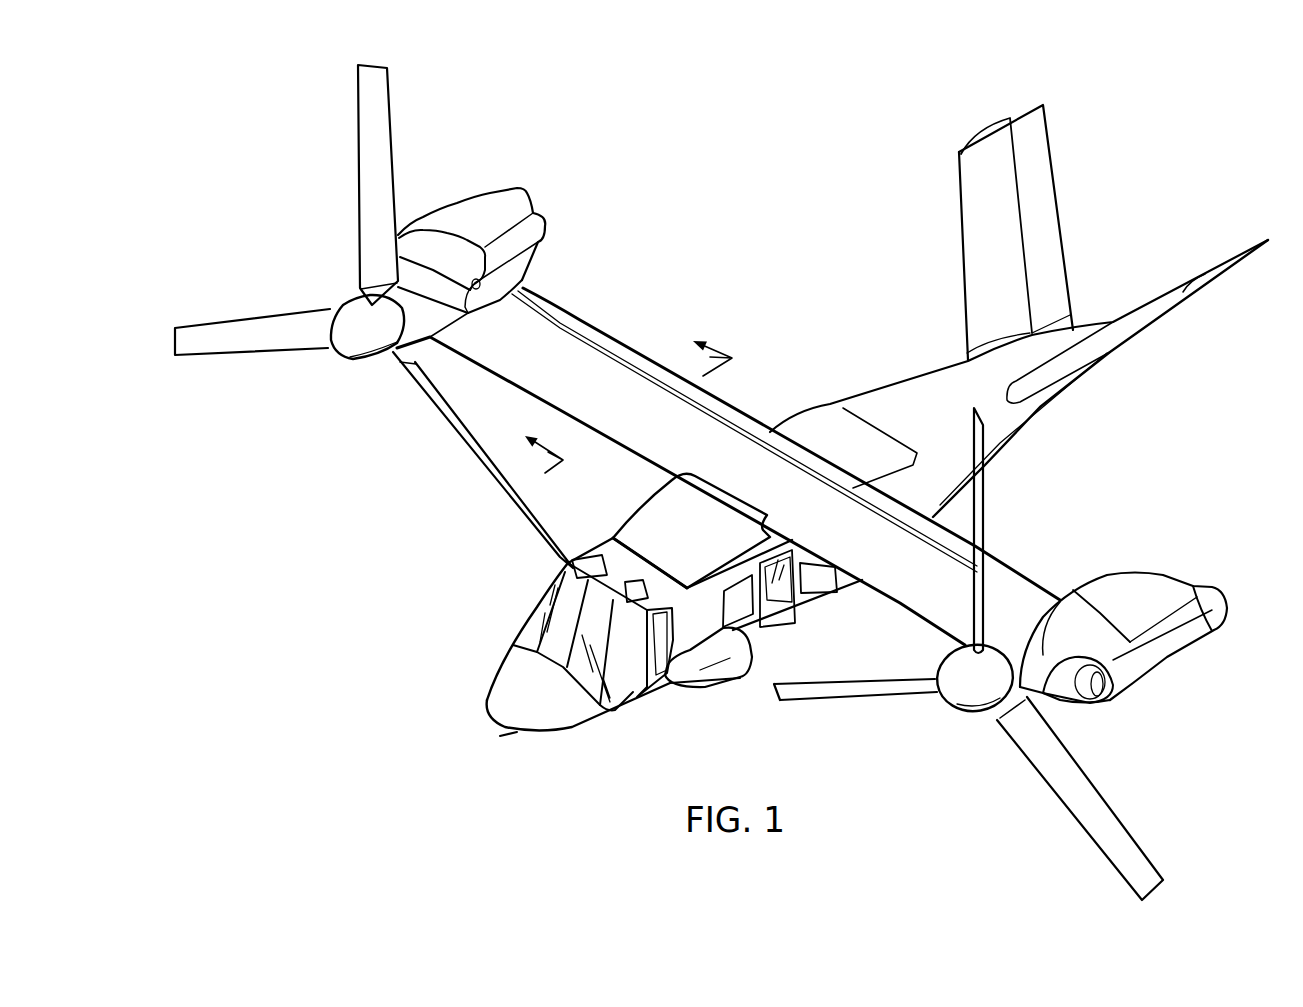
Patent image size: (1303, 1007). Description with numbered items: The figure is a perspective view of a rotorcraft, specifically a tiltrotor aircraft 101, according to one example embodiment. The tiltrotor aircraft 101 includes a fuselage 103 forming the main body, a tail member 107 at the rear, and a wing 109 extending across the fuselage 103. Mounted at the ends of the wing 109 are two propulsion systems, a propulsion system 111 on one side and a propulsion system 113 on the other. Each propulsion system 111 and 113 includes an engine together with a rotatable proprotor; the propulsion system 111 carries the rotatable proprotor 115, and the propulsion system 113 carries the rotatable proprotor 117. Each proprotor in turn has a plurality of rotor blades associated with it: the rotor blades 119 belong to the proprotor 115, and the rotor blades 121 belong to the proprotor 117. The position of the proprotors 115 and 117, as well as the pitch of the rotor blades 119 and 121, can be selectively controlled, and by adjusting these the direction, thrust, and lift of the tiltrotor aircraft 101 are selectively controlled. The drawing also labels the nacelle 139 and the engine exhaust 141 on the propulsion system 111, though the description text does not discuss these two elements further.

The tiltrotor aircraft 101 is at (1163, 117).
The fuselage 103 is at (562, 730).
The tail member 107 is at (1060, 195).
The wing 109 is at (615, 445).
The propulsion system 111 is at (1138, 730).
The propulsion system 113 is at (353, 405).
The rotatable proprotor 115 is at (952, 712).
The rotatable proprotor 117 is at (332, 357).
The rotor blades 119 is at (983, 512).
The rotor blades 121 is at (358, 137).
The nacelle 139 is at (1167, 673).
The engine exhaust 141 is at (1087, 703).